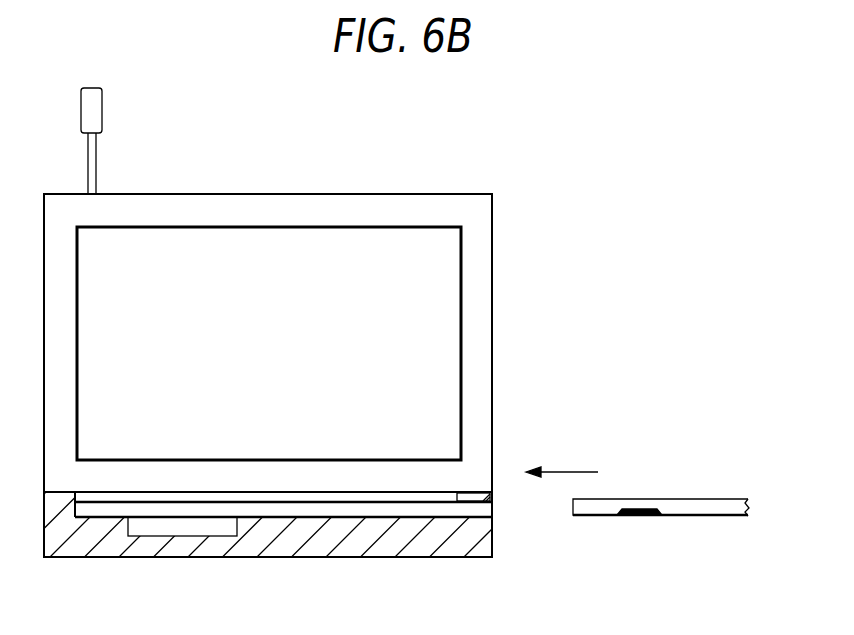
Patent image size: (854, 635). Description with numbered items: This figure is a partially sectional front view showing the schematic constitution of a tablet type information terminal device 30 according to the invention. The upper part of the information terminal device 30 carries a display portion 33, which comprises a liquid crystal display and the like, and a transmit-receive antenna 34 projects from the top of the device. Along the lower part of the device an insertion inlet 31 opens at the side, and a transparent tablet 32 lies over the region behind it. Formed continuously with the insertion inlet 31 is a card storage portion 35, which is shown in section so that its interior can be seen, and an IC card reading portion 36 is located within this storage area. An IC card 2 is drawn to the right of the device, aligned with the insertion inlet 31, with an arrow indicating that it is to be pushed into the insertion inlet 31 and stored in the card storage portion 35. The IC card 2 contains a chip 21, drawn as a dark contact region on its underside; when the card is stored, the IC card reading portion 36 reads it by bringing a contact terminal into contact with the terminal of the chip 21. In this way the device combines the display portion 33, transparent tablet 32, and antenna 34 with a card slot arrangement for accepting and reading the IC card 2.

The IC card 2 is at (685, 497).
The chip 21 is at (640, 517).
The information terminal device 30 is at (545, 179).
The insertion inlet 31 is at (486, 507).
The transparent tablet 32 is at (397, 493).
The display portion 33 is at (303, 243).
The transmit-receive antenna 34 is at (103, 107).
The card storage portion 35 is at (297, 510).
The IC card reading portion 36 is at (184, 533).